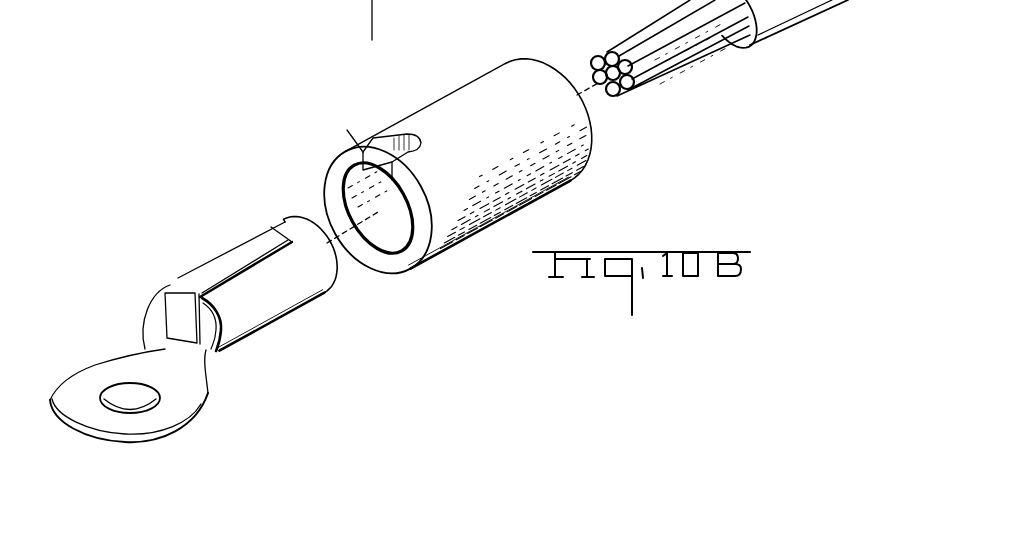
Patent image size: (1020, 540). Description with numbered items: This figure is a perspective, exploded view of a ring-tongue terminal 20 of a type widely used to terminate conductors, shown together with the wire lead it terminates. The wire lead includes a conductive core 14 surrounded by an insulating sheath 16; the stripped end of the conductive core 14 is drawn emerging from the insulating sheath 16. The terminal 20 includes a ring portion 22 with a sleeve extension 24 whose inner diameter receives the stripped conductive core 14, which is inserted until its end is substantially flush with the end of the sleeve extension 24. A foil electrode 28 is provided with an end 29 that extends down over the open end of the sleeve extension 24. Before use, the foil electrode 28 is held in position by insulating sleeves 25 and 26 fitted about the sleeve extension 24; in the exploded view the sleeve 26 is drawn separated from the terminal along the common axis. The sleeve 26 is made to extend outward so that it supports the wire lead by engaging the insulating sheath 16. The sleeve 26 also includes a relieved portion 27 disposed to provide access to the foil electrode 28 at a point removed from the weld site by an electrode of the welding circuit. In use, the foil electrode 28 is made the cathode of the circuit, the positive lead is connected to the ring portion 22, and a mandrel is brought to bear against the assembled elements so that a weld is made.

The conductive core 14 is at (661, 66).
The insulating sheath 16 is at (791, 0).
The ring-tongue terminal 20 is at (128, 249).
The ring portion 22 is at (175, 413).
The sleeve extension 24 is at (213, 347).
The insulating sleeve 25 is at (266, 310).
The insulating sleeve 26 is at (486, 97).
The relieved portion 27 is at (381, 158).
The foil electrode 28 is at (232, 262).
The end of foil electrode 29 is at (177, 322).